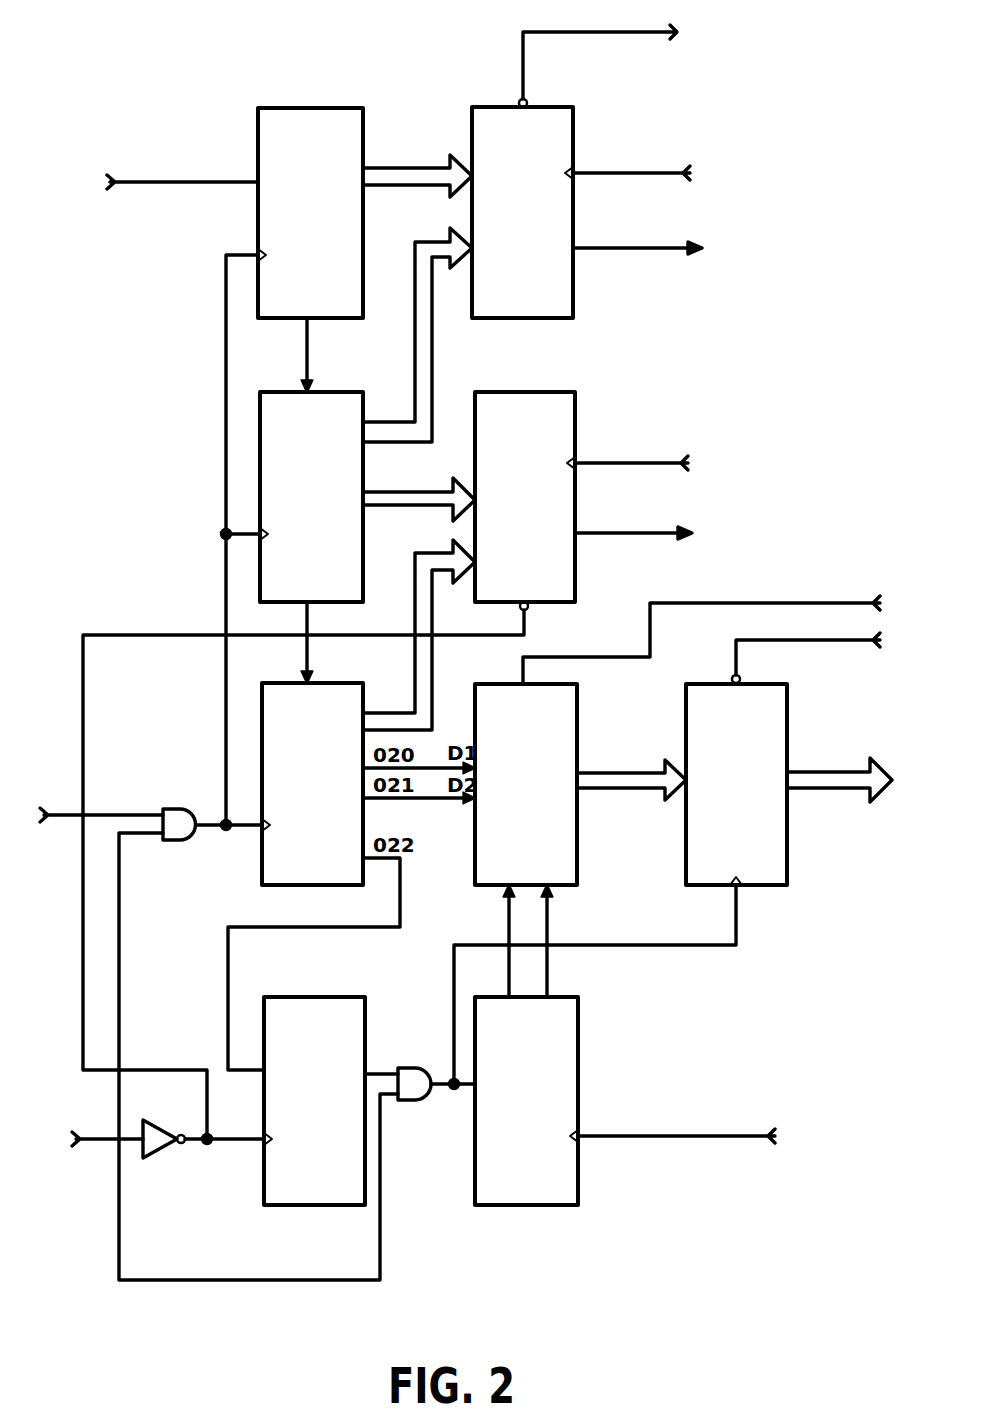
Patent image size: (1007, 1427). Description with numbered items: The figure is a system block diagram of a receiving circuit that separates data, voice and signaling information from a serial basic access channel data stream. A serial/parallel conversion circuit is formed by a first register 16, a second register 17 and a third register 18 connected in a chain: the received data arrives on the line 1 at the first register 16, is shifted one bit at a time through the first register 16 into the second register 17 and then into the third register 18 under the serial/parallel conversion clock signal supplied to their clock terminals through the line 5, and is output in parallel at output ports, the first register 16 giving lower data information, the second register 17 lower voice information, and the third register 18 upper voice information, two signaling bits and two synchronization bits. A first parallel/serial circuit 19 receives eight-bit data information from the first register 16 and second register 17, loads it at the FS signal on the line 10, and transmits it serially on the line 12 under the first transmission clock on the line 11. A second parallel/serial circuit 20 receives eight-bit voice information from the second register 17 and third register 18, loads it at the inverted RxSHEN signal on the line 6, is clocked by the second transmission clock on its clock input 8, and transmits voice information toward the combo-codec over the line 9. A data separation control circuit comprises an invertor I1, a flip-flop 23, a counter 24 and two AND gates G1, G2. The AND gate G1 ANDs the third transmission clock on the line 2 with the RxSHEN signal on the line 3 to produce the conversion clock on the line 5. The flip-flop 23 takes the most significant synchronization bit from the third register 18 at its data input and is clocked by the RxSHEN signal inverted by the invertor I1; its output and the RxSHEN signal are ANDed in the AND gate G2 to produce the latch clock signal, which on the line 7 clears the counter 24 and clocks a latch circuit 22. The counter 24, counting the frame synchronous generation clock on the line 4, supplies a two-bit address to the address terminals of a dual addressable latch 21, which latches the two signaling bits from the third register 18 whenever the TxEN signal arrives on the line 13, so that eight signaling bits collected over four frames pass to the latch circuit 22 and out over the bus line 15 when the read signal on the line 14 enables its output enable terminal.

The line 1 is at (167, 180).
The line 2 is at (63, 815).
The line 3 is at (97, 1137).
The line 4 is at (665, 1137).
The line 5 is at (241, 830).
The line 6 is at (163, 1068).
The line 7 is at (657, 945).
The clock input line of second parallel/serial circuit 8 is at (624, 462).
The line 9 is at (622, 532).
The line 10 is at (632, 33).
The line 11 is at (626, 172).
The line 12 is at (627, 247).
The line 13 is at (786, 602).
The line 14 is at (827, 642).
The bus line 15 is at (820, 771).
The first register 16 is at (310, 107).
The second register 17 is at (333, 392).
The third register 18 is at (354, 683).
The first parallel/serial circuit 19 is at (553, 106).
The second parallel/serial circuit 20 is at (520, 392).
The dual addressable latch 21 is at (577, 700).
The latch circuit 22 is at (787, 830).
The flip-flop 23 is at (328, 997).
The counter 24 is at (578, 1052).
The AND gate G1 is at (175, 808).
The AND gate G2 is at (414, 1068).
The invertor I1 is at (160, 1125).